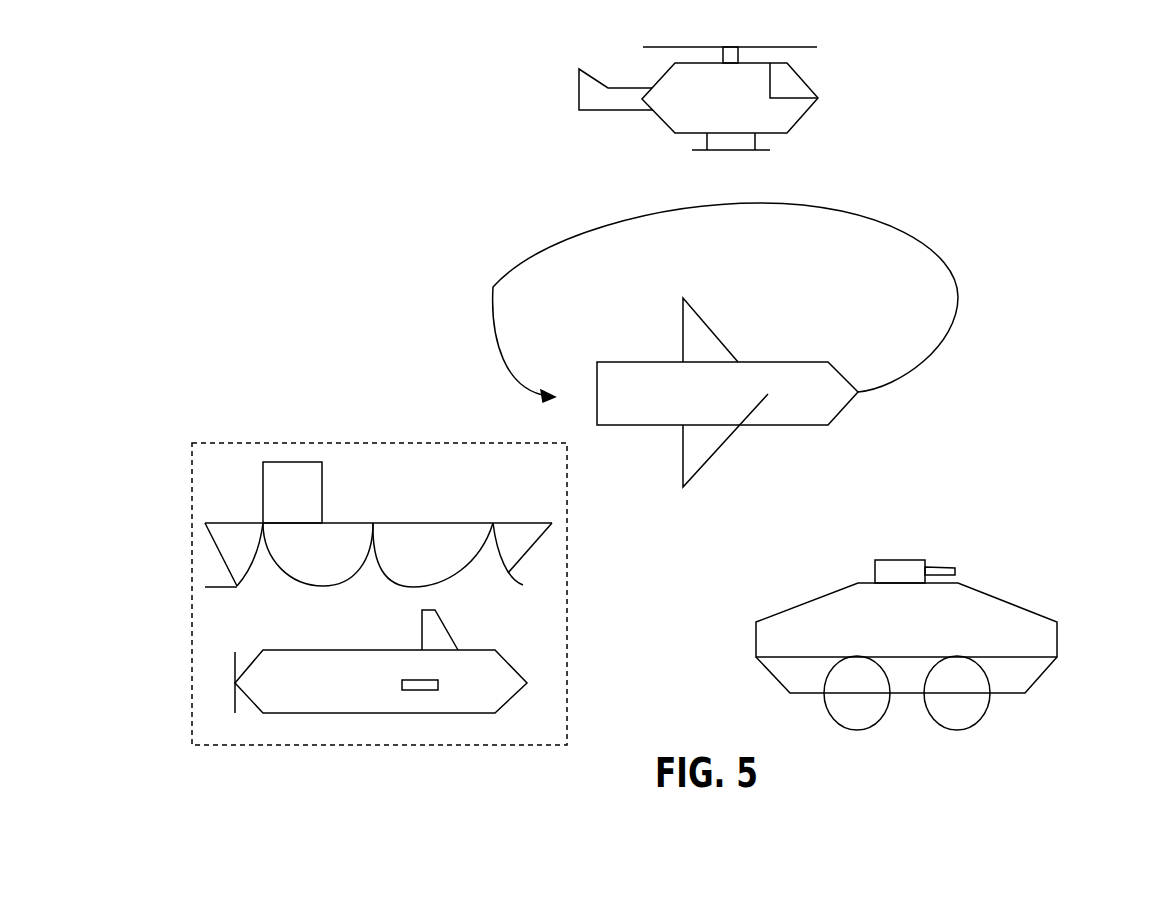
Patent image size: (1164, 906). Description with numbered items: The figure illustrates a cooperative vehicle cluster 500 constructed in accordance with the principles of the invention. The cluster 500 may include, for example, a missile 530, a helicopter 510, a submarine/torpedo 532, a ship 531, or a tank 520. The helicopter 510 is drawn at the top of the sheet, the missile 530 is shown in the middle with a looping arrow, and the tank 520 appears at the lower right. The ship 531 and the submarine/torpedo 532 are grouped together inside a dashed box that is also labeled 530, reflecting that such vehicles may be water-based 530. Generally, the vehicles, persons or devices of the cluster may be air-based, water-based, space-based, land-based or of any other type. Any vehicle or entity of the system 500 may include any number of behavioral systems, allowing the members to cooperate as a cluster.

The cooperative vehicle cluster 500 is at (669, 396).
The helicopter 510 is at (580, 97).
The tank 520 is at (815, 608).
The missile 530 is at (640, 363).
The ship 531 is at (437, 523).
The submarine/torpedo 532 is at (381, 661).